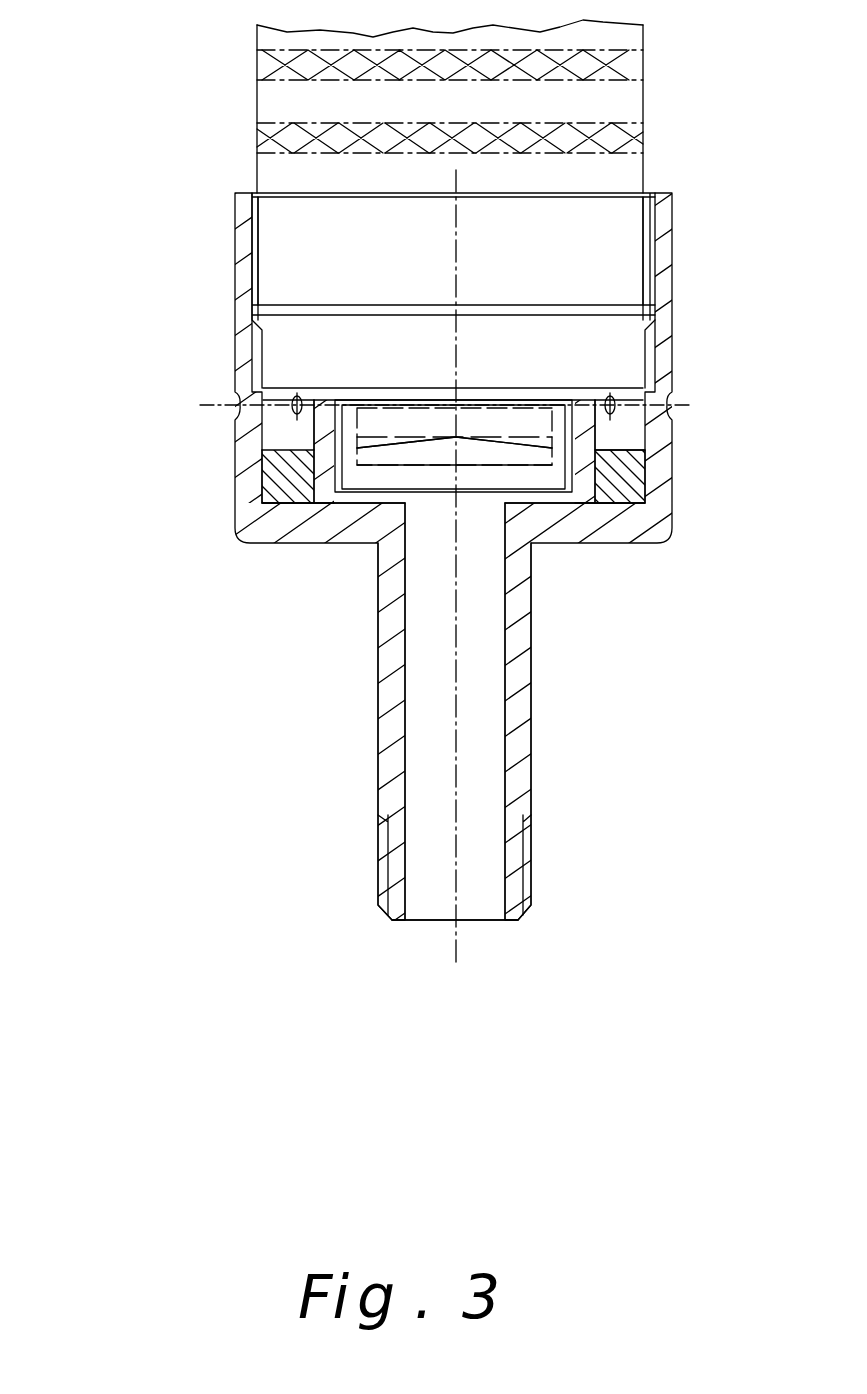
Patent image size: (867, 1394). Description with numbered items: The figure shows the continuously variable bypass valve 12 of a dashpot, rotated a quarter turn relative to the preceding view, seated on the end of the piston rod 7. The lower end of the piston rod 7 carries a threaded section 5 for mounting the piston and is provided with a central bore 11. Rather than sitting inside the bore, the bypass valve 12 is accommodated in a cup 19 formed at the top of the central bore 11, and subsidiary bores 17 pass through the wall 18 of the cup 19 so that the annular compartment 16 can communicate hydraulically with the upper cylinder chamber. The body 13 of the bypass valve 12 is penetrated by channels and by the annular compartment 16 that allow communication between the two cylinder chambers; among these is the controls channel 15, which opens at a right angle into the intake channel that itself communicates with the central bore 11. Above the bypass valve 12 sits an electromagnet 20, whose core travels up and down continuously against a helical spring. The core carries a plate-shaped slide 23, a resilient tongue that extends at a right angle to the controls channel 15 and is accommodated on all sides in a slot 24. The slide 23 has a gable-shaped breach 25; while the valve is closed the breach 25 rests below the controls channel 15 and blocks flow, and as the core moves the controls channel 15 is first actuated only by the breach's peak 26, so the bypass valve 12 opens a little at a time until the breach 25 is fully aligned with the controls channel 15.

The threaded section 5 is at (537, 875).
The piston rod 7 is at (524, 714).
The central bore 11 is at (422, 832).
The bypass valve 12 is at (186, 338).
The body 13 is at (123, 497).
The controls channel 15 is at (555, 370).
The annular compartment 16 is at (627, 432).
The subsidiary bores 17 is at (142, 396).
The wall 18 is at (660, 352).
The cup 19 is at (215, 638).
The electromagnet 20 is at (665, 102).
The slide 23 is at (374, 476).
The slot 24 is at (579, 470).
The breach 25 is at (490, 445).
The peak 26 is at (396, 350).